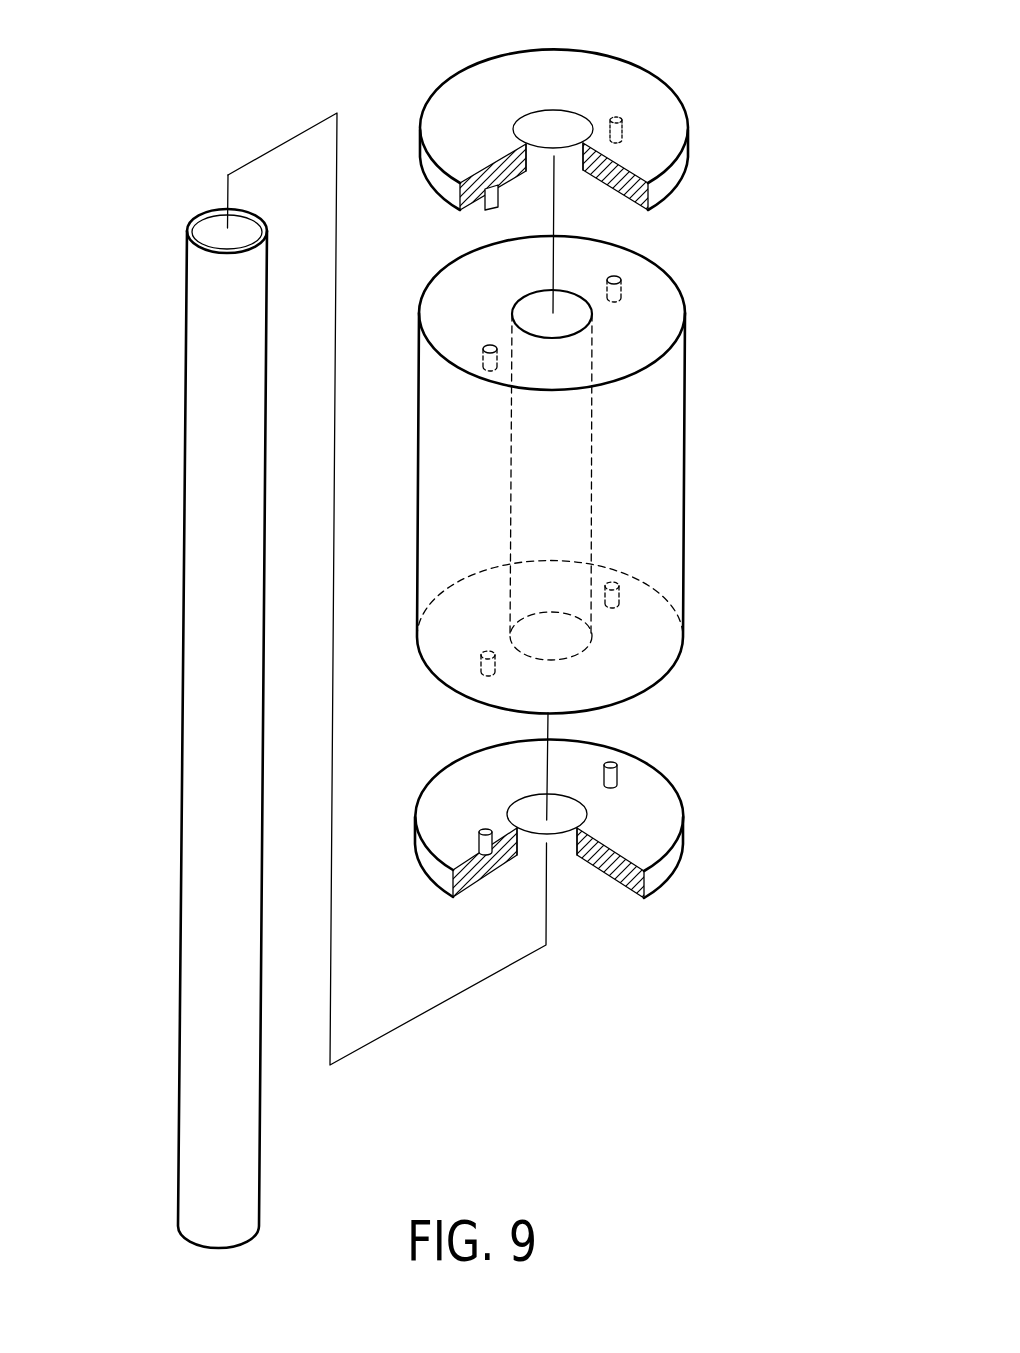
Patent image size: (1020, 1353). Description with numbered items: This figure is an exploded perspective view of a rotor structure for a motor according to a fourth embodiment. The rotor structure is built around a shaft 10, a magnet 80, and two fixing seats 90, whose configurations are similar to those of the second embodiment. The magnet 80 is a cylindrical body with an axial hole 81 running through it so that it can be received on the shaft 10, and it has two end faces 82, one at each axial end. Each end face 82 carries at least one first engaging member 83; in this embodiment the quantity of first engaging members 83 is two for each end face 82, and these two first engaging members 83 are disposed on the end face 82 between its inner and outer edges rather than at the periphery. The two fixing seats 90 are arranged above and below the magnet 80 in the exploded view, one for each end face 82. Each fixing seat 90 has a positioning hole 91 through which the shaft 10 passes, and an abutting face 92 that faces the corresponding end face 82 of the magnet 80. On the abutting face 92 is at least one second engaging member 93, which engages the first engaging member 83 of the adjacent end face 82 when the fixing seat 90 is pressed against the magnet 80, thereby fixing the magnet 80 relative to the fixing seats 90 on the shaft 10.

The shaft 10 is at (206, 537).
The magnet 80 is at (656, 487).
The axial hole 81 is at (568, 313).
The end face 82 is at (653, 335).
The first engaging member 83 is at (487, 347).
The fixing seat 90 is at (665, 134).
The positioning hole 91 is at (554, 118).
The abutting face 92 is at (620, 196).
The second engaging member 93 is at (487, 208).